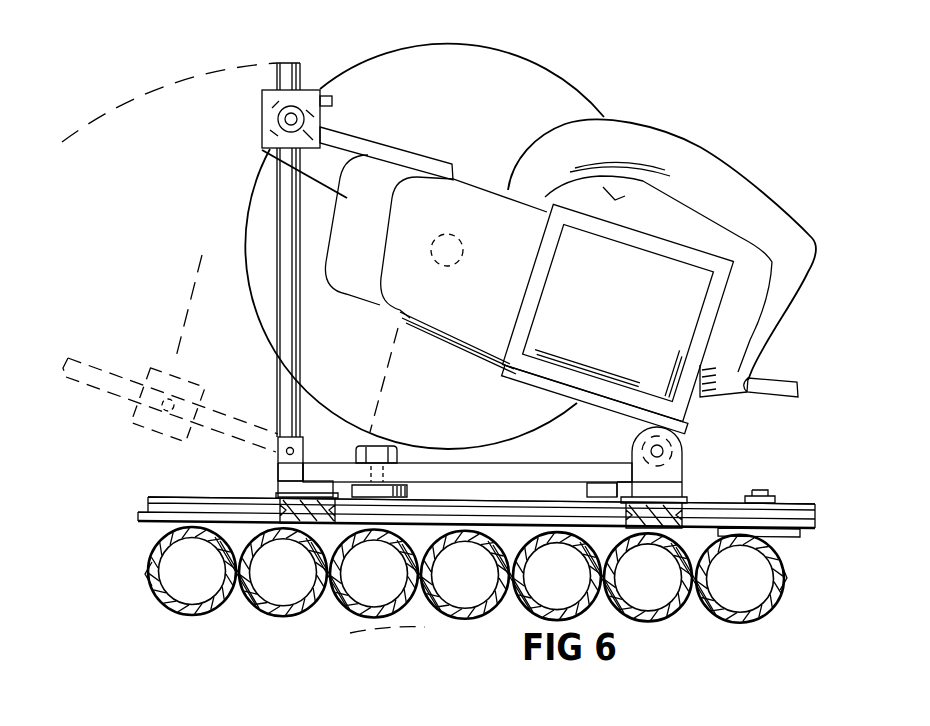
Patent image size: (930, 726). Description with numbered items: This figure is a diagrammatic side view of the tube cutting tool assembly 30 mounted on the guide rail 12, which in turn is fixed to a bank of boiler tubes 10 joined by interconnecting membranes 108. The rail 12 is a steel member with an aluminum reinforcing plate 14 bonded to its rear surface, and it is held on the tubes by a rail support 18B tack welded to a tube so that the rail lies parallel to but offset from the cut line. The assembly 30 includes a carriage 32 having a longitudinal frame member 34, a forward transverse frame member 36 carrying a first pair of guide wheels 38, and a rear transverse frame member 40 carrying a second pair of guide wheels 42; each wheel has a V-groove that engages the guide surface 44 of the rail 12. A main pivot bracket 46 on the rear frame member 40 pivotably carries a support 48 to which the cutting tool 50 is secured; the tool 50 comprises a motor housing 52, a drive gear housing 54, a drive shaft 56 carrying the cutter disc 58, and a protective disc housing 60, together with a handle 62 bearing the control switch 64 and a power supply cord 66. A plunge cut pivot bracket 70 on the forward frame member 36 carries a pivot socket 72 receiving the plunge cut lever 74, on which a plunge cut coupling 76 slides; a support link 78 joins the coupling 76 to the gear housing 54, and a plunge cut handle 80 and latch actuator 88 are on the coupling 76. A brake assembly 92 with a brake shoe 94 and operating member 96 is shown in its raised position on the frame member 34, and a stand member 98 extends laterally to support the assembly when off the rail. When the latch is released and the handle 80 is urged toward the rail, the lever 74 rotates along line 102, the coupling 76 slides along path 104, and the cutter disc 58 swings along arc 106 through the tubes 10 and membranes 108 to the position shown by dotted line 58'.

The boiler tubes 10 is at (154, 603).
The guide rail 12 is at (186, 493).
The reinforcing plate 14 is at (140, 518).
The rail support 18B is at (790, 541).
The tube cutting tool assembly 30 is at (665, 92).
The carriage 32 is at (688, 490).
The longitudinal frame member 34 is at (347, 466).
The forward transverse frame member 36 is at (278, 486).
The guide wheels 38 is at (300, 518).
The rear transverse frame member 40 is at (684, 490).
The guide wheels 42 is at (660, 522).
The guide surface 44 is at (167, 498).
The main pivot bracket 46 is at (681, 455).
The support 48 is at (642, 425).
The cutting tool 50 is at (780, 319).
The motor housing 52 is at (673, 263).
The drive gear housing 54 is at (395, 185).
The drive shaft 56 is at (450, 236).
The cutter disc 58 is at (430, 419).
The cutter disc plunged position 58' is at (417, 637).
The protective disc housing 60 is at (484, 95).
The handle 62 is at (745, 180).
The control switch 64 is at (603, 189).
The power supply cord 66 is at (790, 377).
The plunge cut pivot bracket 70 is at (278, 468).
The pivot socket 72 is at (278, 437).
The plunge cut lever 74 is at (280, 66).
The plunge cut coupling 76 is at (263, 102).
The support link 78 is at (325, 126).
The plunge cut handle 80 is at (280, 127).
The latch actuator 88 is at (331, 99).
The brake assembly 92 is at (373, 446).
The brake shoe 94 is at (384, 497).
The operating member 96 is at (400, 451).
The stand member 98 is at (600, 486).
The line 102 is at (78, 123).
The path 104 is at (192, 268).
The arc 106 is at (377, 385).
The membranes 108 is at (240, 590).